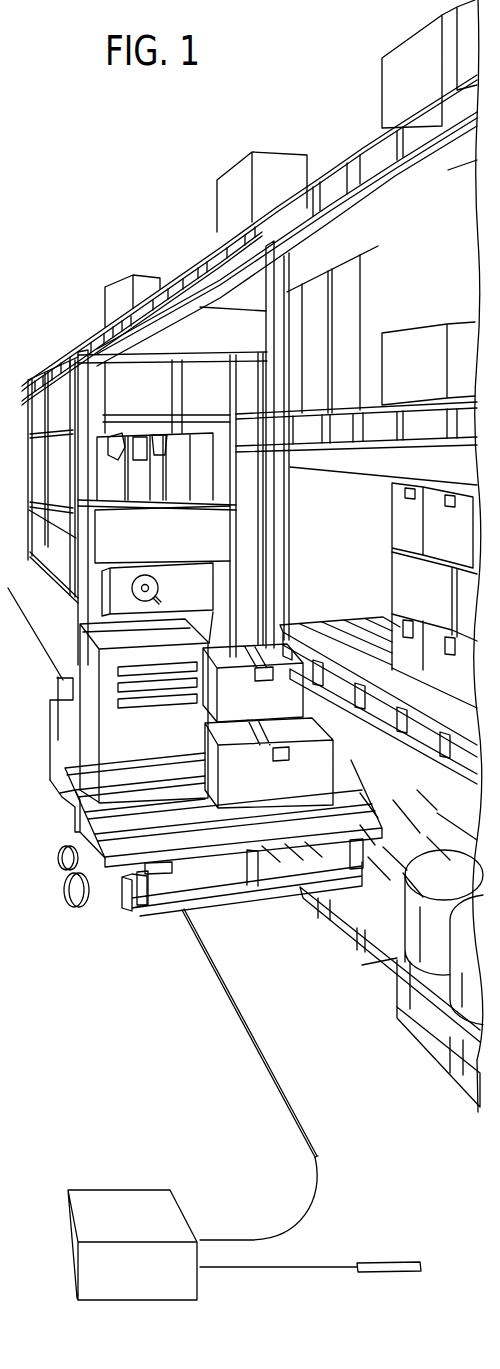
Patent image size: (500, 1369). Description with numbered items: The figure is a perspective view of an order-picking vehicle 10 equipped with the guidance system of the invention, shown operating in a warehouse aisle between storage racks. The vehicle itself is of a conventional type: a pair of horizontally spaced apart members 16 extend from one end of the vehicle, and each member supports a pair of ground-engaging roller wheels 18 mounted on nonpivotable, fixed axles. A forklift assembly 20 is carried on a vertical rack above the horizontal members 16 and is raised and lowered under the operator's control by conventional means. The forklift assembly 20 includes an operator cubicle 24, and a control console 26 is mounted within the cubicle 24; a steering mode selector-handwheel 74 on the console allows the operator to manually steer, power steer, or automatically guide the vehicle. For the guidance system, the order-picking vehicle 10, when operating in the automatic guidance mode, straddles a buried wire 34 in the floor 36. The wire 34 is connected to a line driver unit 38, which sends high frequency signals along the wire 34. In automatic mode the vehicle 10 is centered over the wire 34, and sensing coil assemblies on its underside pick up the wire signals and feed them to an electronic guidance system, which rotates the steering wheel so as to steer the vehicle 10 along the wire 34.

The order-picking vehicle 10 is at (58, 730).
The horizontally spaced apart members 16 is at (63, 846).
The ground-engaging roller wheels 18 is at (84, 884).
The forklift assembly 20 is at (157, 875).
The operator cubicle 24 is at (80, 372).
The control console 26 is at (215, 583).
The buried wire 34 is at (213, 953).
The floor 36 is at (351, 1064).
The line driver unit 38 is at (178, 1205).
The steering mode selector-handwheel 74 is at (158, 583).